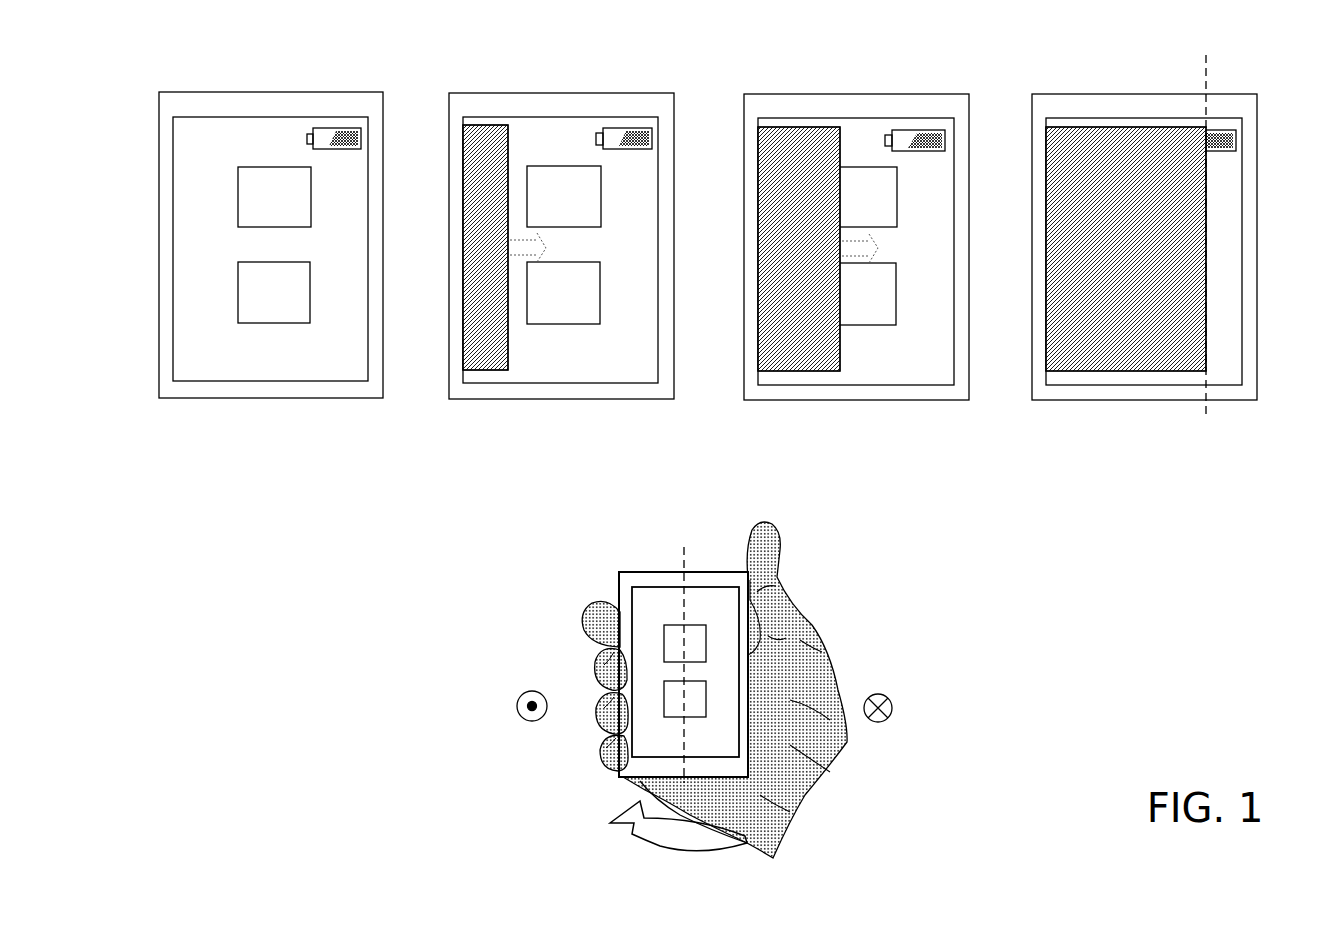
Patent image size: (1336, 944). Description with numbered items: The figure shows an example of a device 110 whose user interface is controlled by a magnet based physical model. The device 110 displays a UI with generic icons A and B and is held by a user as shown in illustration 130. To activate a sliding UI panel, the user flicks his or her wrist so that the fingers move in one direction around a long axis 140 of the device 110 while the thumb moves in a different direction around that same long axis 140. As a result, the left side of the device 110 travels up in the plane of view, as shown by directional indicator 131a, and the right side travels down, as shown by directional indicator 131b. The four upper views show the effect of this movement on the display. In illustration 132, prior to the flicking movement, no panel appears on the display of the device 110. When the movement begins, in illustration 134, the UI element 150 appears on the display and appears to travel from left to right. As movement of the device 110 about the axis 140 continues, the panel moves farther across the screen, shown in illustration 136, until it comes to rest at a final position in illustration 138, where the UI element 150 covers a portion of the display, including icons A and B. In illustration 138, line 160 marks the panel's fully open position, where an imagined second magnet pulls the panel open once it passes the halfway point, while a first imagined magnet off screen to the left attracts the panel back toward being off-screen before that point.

The device 110 is at (708, 450).
The illustration 130 is at (567, 563).
The directional indicator 131a is at (517, 705).
The directional indicator 131b is at (892, 708).
The illustration 132 is at (273, 89).
The illustration 134 is at (564, 89).
The illustration 136 is at (873, 91).
The illustration 138 is at (1153, 89).
The long axis 140 is at (684, 550).
The UI element 150 is at (487, 343).
The line 160 is at (1208, 75).